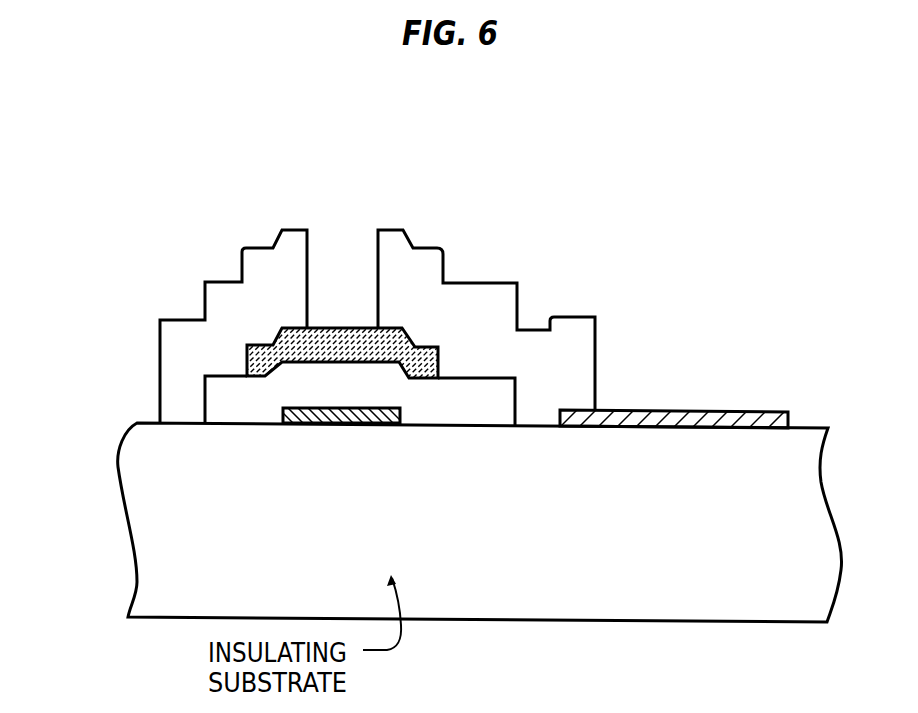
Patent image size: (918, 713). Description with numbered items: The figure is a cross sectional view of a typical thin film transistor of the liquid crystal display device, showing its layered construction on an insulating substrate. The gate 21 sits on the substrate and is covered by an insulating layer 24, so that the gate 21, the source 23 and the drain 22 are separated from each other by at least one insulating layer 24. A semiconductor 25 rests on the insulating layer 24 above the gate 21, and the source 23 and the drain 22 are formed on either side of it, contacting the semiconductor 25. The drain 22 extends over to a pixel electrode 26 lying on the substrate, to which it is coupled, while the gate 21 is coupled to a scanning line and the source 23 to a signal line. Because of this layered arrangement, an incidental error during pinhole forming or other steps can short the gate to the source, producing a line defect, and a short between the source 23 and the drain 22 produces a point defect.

The gate electrode 21 is at (329, 426).
The drain electrode 22 is at (463, 314).
The source electrode 23 is at (240, 299).
The insulating layer 24 is at (454, 400).
The semiconductor 25 is at (331, 330).
The pixel electrode 26 is at (648, 404).